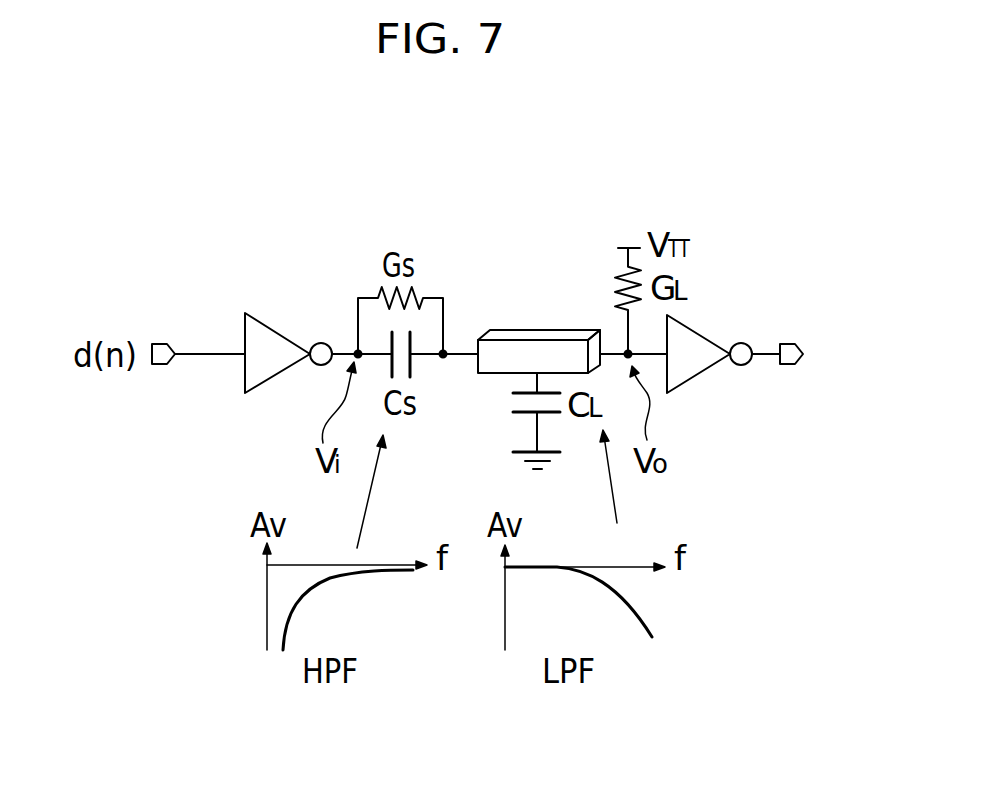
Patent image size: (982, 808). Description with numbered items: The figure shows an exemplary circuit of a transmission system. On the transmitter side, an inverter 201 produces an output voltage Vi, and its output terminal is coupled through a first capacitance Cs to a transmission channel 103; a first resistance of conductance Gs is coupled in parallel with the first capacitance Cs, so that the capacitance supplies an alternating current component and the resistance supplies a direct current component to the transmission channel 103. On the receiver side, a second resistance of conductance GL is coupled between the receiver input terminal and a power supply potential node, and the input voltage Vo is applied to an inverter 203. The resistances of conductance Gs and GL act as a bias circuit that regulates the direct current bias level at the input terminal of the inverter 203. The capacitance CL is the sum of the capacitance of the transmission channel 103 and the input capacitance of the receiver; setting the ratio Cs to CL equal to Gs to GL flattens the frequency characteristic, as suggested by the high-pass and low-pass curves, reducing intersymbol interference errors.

The inverter 201 is at (288, 331).
The transmission channel 103 is at (542, 331).
The inverter 203 is at (697, 330).